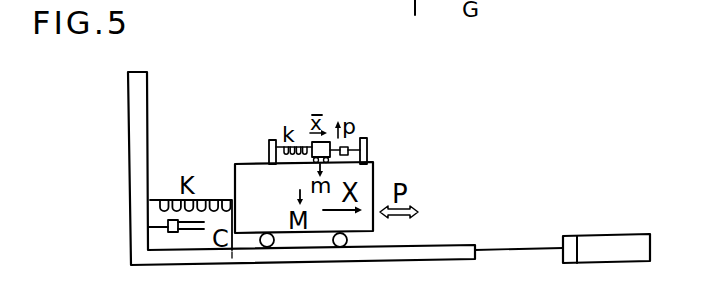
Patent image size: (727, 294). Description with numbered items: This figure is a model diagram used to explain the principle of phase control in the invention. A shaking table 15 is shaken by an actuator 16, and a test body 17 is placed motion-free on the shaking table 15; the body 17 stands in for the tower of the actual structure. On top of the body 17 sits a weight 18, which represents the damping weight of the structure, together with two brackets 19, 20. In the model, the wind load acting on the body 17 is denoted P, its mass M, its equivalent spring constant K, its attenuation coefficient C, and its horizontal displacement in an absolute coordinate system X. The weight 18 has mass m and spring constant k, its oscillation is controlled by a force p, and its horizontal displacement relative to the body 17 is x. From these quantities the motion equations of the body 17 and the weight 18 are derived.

The shaking table 15 is at (430, 246).
The actuator 16 is at (620, 238).
The test body 17 is at (372, 178).
The weight 18 is at (313, 143).
The bracket 19 is at (269, 143).
The bracket 20 is at (363, 141).